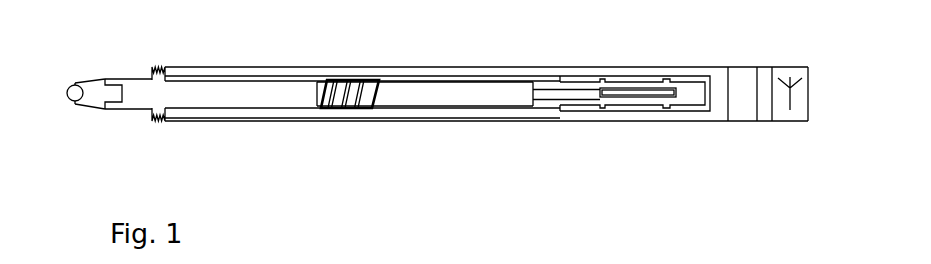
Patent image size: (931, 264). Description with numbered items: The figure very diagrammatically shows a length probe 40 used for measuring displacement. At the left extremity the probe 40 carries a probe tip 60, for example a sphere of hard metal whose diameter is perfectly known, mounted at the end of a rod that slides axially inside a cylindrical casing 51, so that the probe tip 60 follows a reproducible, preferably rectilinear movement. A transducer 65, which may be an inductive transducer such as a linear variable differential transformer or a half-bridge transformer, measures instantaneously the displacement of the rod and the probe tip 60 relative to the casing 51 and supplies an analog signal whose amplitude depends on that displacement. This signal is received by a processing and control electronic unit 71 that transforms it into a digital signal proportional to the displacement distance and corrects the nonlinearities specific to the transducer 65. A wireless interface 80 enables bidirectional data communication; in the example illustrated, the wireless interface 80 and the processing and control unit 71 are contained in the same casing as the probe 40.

The length probe 40 is at (514, 167).
The cylindrical casing 51 is at (351, 121).
The probe tip 60 is at (72, 99).
The transducer 65 is at (646, 67).
The processing and control electronic unit 71 is at (752, 67).
The wireless interface 80 is at (808, 87).